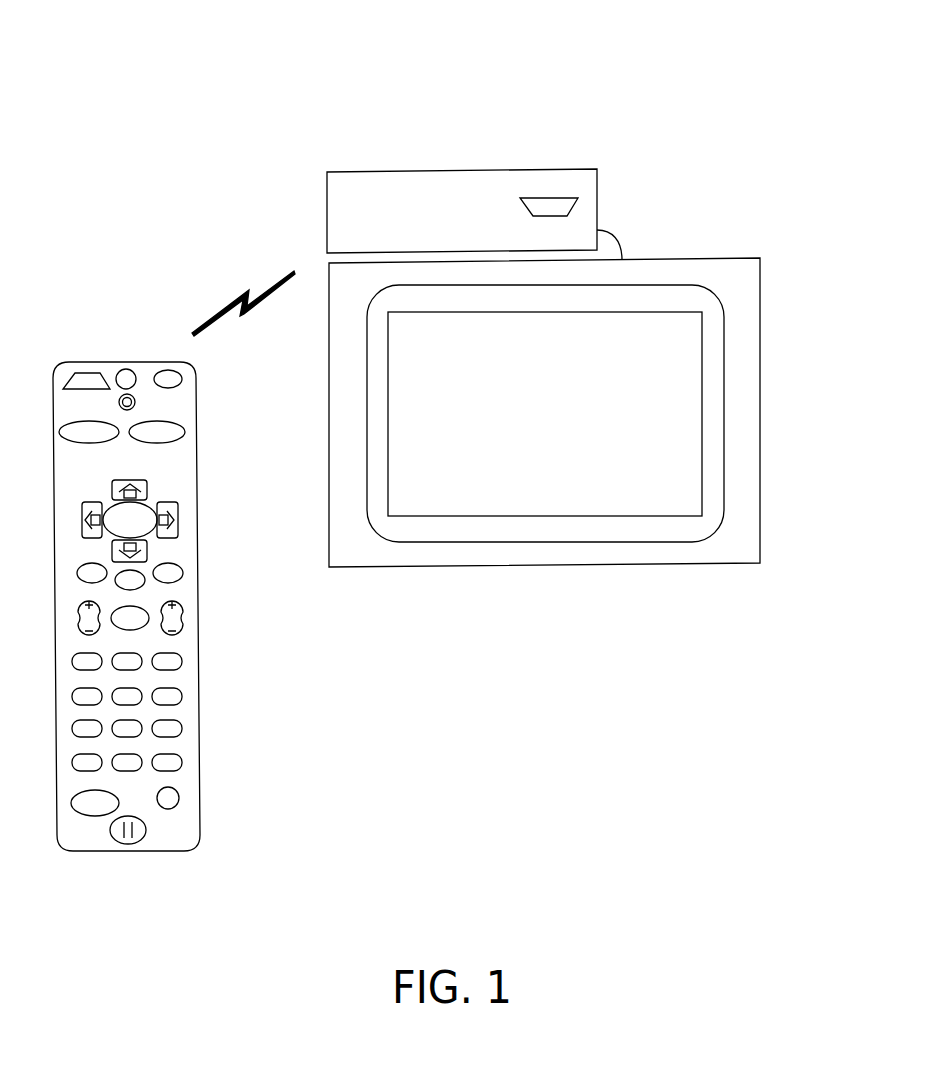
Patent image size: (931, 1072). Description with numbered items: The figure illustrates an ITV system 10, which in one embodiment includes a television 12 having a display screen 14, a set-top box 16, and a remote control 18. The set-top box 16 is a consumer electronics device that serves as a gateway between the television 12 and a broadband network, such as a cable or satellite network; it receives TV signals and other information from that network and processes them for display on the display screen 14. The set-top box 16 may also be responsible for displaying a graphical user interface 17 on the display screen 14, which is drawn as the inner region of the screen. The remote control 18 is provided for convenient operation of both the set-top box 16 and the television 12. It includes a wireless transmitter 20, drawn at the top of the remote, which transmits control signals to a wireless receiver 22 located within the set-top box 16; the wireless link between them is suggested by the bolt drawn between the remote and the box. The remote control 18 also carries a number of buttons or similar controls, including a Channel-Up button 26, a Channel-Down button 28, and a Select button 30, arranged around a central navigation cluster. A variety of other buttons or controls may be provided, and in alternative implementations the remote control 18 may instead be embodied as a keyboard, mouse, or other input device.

The ITV system 10 is at (678, 80).
The television 12 is at (760, 315).
The display screen 14 is at (724, 395).
The set-top box 16 is at (402, 169).
The graphical user interface 17 is at (702, 467).
The remote control 18 is at (200, 700).
The wireless transmitter 20 is at (76, 372).
The wireless receiver 22 is at (577, 205).
The Channel-Up button 26 is at (147, 493).
The Channel-Down button 28 is at (147, 548).
The Select button 30 is at (112, 540).